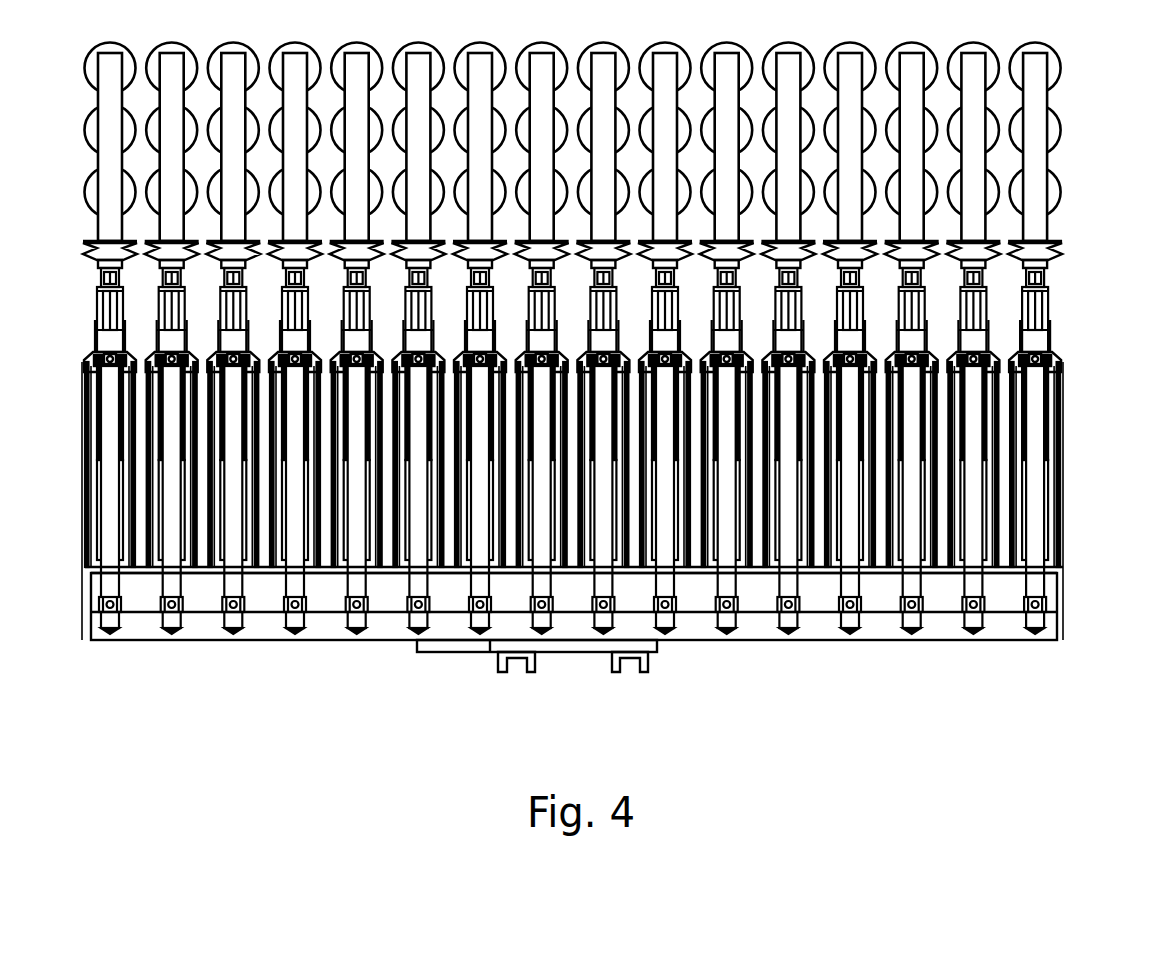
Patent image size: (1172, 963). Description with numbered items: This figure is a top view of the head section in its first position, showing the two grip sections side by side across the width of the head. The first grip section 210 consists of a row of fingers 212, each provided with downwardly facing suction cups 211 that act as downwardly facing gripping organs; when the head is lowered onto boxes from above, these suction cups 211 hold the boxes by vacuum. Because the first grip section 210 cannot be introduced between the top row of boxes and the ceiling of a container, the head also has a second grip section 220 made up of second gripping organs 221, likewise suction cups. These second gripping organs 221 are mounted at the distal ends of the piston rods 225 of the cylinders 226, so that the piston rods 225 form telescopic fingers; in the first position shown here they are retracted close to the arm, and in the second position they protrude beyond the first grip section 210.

The first grip section 210 is at (618, 142).
The downwardly facing suction cups 211 is at (1050, 72).
The fingers 212 is at (1038, 98).
The second grip section 220 is at (617, 451).
The second gripping organs 221 is at (1050, 258).
The piston rods 225 is at (1036, 318).
The cylinders 226 is at (1035, 448).